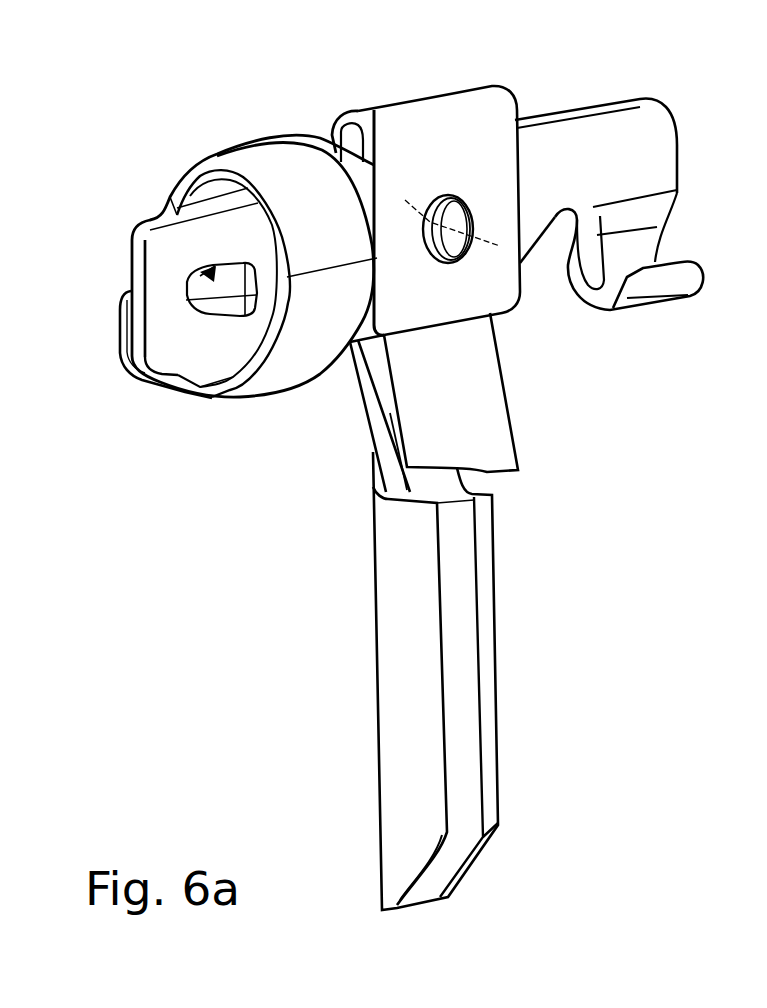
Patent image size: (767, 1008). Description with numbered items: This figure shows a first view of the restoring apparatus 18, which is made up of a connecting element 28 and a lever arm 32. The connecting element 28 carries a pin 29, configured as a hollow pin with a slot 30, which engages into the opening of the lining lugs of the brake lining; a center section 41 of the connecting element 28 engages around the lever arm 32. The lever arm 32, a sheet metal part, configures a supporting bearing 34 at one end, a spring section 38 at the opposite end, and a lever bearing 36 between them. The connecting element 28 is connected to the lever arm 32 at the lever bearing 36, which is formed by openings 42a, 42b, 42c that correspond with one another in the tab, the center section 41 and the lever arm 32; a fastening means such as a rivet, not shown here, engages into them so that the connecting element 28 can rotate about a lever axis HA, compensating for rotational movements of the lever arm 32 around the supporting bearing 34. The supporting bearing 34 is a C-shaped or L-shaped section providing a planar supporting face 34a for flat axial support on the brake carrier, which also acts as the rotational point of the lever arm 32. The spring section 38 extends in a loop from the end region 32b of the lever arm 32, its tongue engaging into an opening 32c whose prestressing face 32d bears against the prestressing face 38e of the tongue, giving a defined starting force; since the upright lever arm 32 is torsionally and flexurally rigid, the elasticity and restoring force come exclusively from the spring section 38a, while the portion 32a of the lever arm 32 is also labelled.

The restoring apparatus 18 is at (574, 87).
The connecting element 28 is at (337, 430).
The pin 29 is at (398, 693).
The slot 30 is at (476, 716).
The lever arm 32 is at (607, 102).
The housing body portion 32a is at (738, 658).
The end region 32b is at (170, 343).
The opening 32c is at (215, 269).
The prestressing face 32d is at (187, 300).
The supporting bearing 34 is at (643, 260).
The supporting face 34a is at (655, 306).
The lever bearing 36 is at (446, 262).
The spring section 38 is at (154, 190).
The spring section 38a is at (170, 399).
The prestressing face 38e is at (217, 318).
The center section 41 is at (331, 125).
The opening 42a is at (468, 215).
The opening 42b is at (432, 208).
The opening 42c is at (443, 196).
The lever axis HA is at (494, 247).